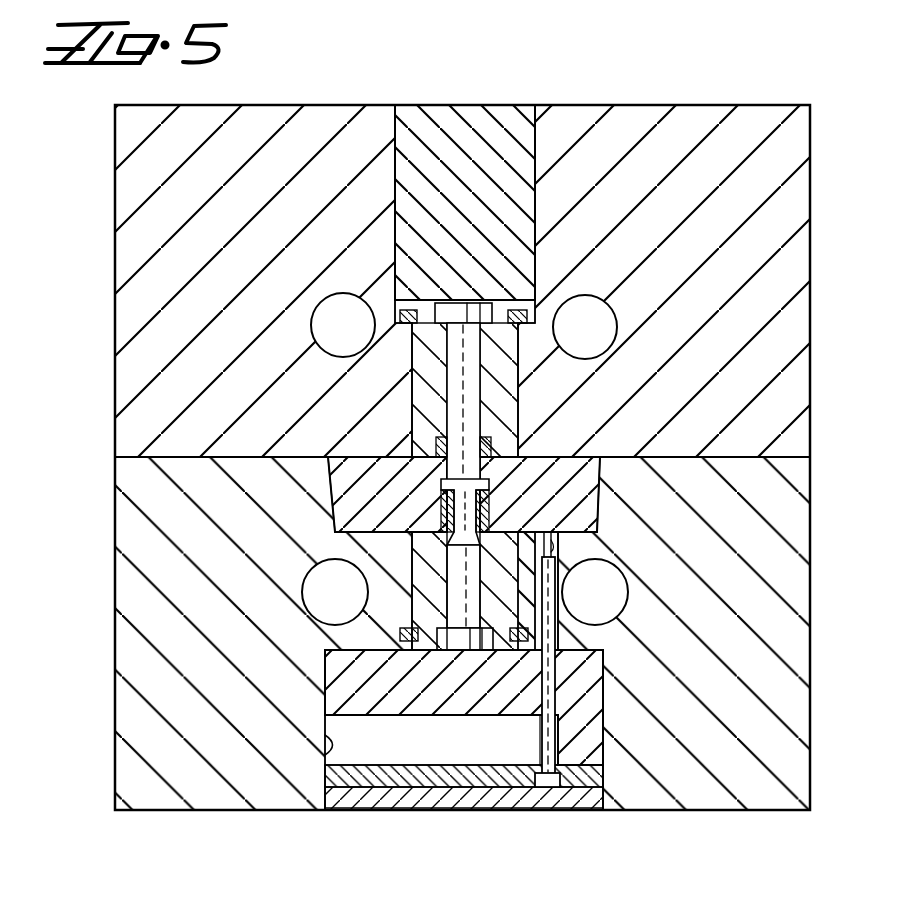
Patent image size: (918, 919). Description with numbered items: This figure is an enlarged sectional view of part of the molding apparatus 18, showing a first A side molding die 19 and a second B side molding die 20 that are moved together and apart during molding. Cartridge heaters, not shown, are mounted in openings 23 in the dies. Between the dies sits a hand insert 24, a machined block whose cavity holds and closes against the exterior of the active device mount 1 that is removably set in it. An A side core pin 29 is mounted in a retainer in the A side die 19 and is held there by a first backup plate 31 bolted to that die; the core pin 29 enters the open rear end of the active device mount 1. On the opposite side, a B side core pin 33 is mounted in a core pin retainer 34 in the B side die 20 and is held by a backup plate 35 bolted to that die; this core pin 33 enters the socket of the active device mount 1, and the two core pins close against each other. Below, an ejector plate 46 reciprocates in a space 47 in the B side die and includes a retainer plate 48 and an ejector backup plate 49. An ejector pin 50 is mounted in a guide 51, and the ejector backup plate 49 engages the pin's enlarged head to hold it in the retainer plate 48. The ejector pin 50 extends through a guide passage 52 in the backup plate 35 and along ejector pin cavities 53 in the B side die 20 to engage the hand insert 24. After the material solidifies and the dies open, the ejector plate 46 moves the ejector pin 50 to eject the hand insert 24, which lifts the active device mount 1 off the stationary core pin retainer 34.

The active device mount 1 is at (440, 497).
The molding apparatus 18 is at (100, 270).
The first "A" side molding die 19 is at (622, 125).
The second "B" side molding die 20 is at (725, 765).
The openings 23 is at (335, 305).
The hand insert 24 is at (348, 490).
The "A" side core pin 29 is at (455, 353).
The first backup plate 31 is at (445, 118).
The "B" side core pin 33 is at (455, 572).
The core pin retainer 34 is at (425, 598).
The backup plate 35 is at (445, 705).
The ejector plate 46 is at (375, 815).
The space 47 is at (330, 758).
The retainer plate 48 is at (405, 787).
The ejector backup plate 49 is at (473, 808).
The ejector pin 50 is at (562, 742).
The guide 51 is at (541, 760).
The guide passage 52 is at (555, 672).
The ejector pin cavities 53 is at (555, 528).